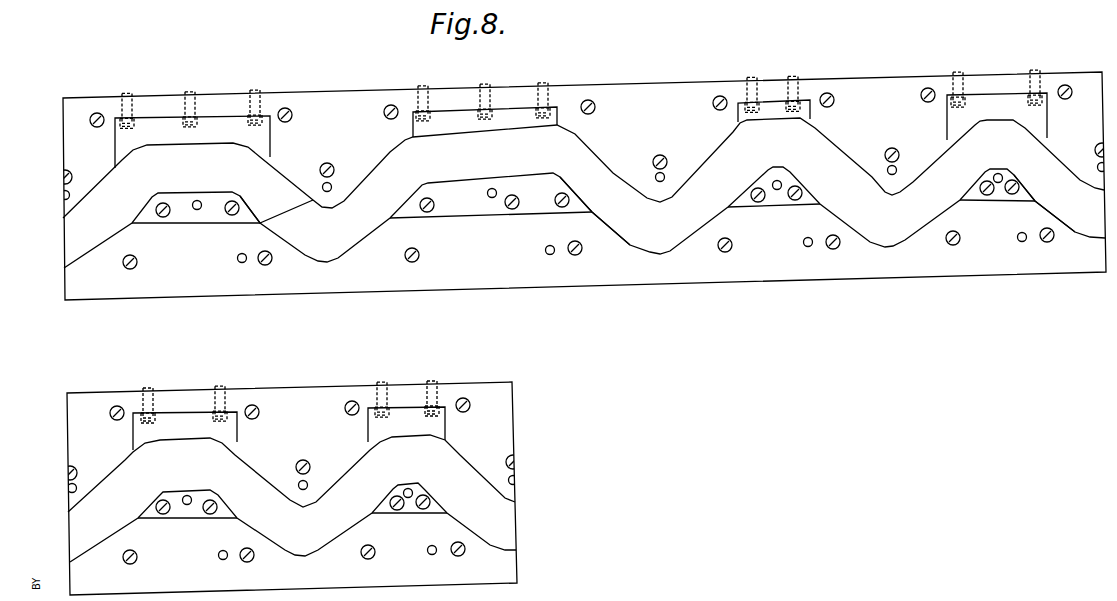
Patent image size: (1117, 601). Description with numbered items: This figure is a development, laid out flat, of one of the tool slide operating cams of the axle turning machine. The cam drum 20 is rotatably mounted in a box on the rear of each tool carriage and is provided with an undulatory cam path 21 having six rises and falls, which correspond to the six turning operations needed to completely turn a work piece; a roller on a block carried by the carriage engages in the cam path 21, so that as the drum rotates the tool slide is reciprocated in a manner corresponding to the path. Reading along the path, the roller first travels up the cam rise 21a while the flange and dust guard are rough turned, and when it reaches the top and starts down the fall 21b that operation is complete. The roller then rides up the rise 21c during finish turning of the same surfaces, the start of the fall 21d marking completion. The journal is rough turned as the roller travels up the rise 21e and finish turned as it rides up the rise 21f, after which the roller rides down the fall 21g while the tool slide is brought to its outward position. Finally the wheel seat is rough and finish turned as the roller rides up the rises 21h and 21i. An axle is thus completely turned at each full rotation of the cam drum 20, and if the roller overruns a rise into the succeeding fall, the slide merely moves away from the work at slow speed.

The cam drum 20 is at (343, 280).
The cam path 21 is at (80, 232).
The cam rise 21a is at (190, 192).
The cam fall 21b is at (258, 215).
The cam rise 21c is at (473, 183).
The cam fall 21d is at (587, 202).
The cam rise 21e is at (750, 183).
The cam rise 21f is at (972, 188).
The cam fall 21g is at (1033, 190).
The cam rise 21h is at (153, 502).
The cam rise 21i is at (392, 493).